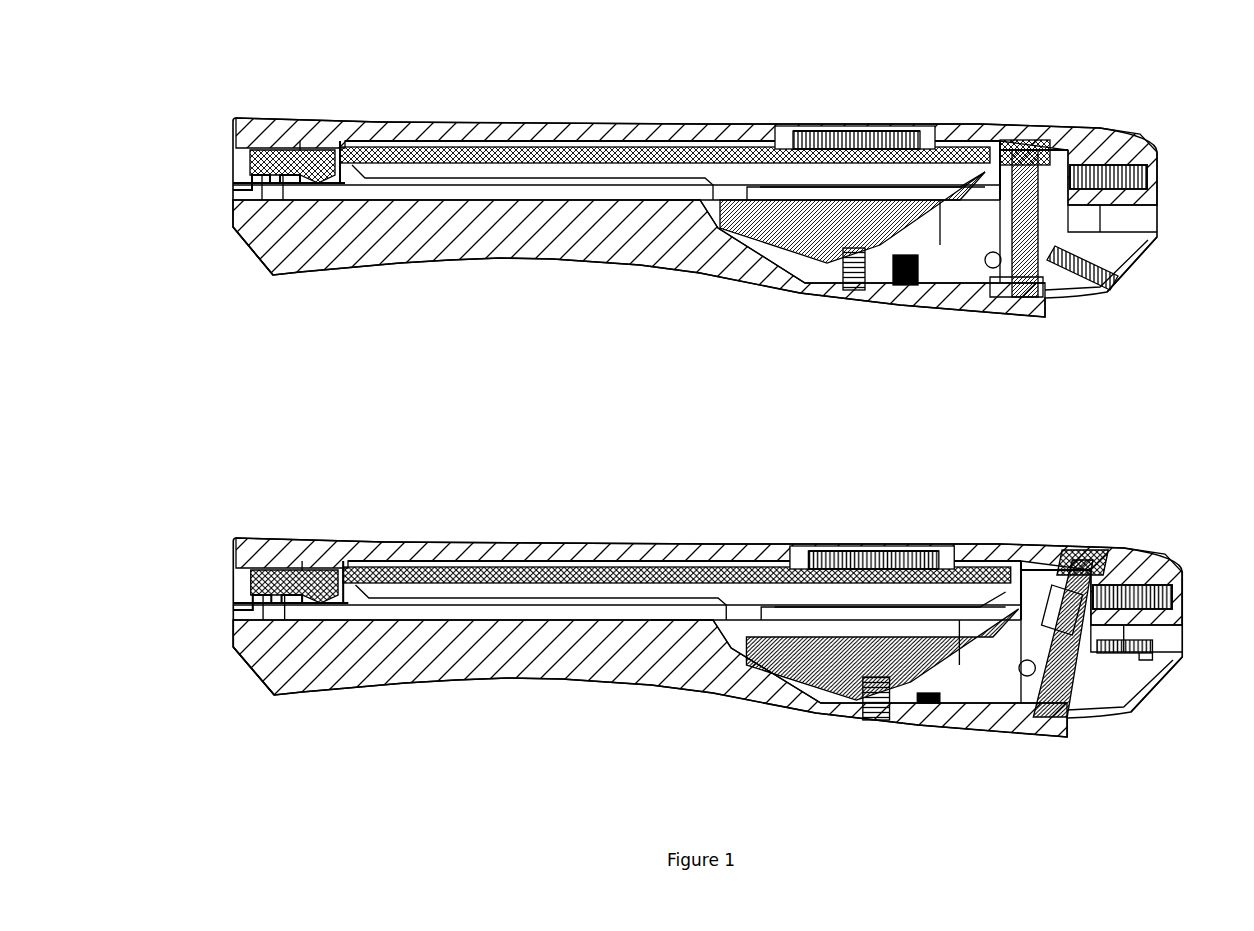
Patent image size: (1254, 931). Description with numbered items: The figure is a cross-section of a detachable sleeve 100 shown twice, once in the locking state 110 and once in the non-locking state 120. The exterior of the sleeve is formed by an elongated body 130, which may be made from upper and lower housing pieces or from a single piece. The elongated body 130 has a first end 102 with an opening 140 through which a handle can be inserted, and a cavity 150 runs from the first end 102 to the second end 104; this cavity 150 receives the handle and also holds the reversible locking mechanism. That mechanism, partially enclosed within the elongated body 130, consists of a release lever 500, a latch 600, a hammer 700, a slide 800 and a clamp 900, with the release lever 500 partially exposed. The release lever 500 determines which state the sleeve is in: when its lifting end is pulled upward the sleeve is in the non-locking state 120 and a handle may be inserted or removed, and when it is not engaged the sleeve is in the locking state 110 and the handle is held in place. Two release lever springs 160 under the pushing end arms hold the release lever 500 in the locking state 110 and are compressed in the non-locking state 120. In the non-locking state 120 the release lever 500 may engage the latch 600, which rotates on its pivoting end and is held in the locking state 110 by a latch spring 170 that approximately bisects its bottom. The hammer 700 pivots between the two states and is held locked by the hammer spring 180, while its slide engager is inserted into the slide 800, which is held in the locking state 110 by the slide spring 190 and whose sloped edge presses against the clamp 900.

The detachable sleeve 100 is at (132, 574).
The first end 102 is at (243, 471).
The second end 104 is at (1167, 472).
The locking state 110 is at (1141, 41).
The non-locking state 120 is at (1146, 470).
The elongated body 130 is at (630, 126).
The opening 140 is at (232, 192).
The cavity 150 is at (863, 190).
The release lever springs 160 is at (908, 285).
The latch spring 170 is at (853, 285).
The hammer spring 180 is at (1130, 172).
The slide spring 190 is at (848, 133).
The release lever 500 is at (1103, 273).
The latch 600 is at (800, 222).
The hammer 700 is at (1020, 260).
The slide 800 is at (445, 148).
The clamp 900 is at (299, 158).